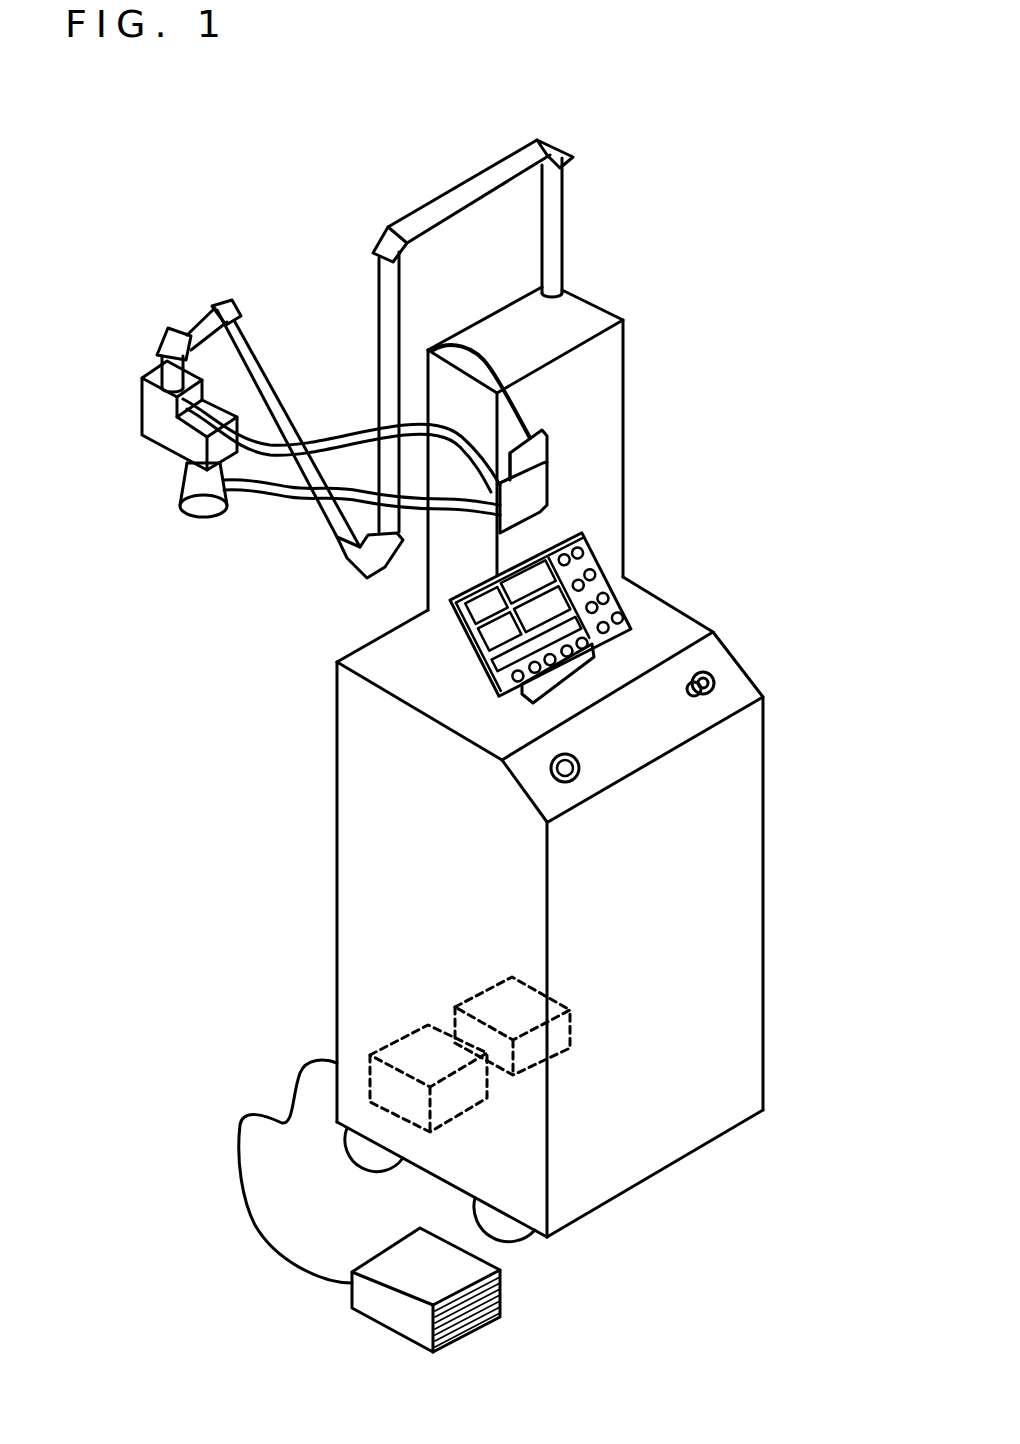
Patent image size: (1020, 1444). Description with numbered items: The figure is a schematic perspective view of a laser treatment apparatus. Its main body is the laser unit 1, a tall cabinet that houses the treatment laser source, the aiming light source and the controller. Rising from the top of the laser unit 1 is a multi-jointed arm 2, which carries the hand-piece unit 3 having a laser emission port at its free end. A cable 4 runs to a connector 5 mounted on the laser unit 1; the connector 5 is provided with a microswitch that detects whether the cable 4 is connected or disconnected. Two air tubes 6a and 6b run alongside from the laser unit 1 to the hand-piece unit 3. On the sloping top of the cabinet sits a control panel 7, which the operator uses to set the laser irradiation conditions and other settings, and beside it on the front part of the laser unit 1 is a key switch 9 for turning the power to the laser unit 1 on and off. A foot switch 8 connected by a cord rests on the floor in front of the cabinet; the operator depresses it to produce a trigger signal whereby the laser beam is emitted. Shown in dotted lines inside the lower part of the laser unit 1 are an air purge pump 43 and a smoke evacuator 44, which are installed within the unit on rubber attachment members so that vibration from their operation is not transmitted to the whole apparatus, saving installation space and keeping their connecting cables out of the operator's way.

The laser unit 1 is at (710, 840).
The multi-jointed arm 2 is at (372, 128).
The hand-piece unit 3 is at (136, 453).
The cable 4 is at (343, 383).
The connector 5 is at (537, 492).
The air tube 6a is at (303, 478).
The air tube 6b is at (350, 488).
The control panel 7 is at (610, 605).
The foot switch 8 is at (450, 1268).
The key switch 9 is at (720, 676).
The air purge pump 43 is at (393, 1040).
The smoke evacuator 44 is at (478, 993).